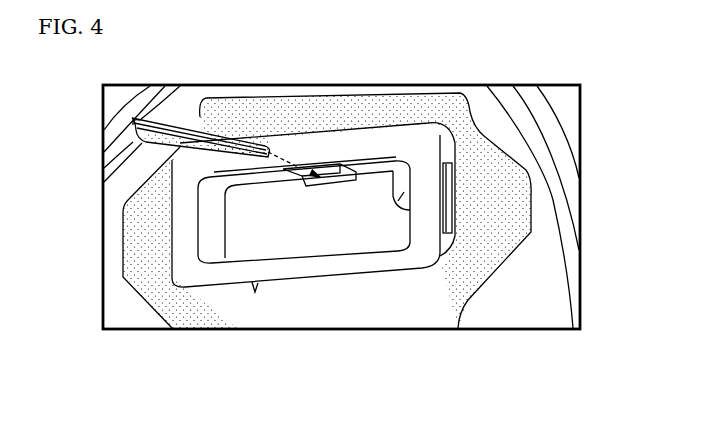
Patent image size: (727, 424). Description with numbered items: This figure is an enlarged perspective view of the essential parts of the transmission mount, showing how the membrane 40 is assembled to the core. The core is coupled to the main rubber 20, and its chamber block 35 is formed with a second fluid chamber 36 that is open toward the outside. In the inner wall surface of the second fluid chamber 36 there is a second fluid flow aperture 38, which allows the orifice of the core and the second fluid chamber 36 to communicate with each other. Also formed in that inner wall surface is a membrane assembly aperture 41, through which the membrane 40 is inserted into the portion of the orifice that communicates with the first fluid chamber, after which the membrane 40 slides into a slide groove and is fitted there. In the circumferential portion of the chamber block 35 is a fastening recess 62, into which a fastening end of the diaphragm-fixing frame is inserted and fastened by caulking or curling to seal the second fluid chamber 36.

The main rubber 20 is at (428, 312).
The chamber block 35 is at (156, 237).
The second fluid chamber 36 is at (280, 238).
The second fluid flow aperture 38 is at (393, 192).
The membrane 40 is at (177, 137).
The membrane assembly aperture 41 is at (342, 186).
The fastening recess 62 is at (452, 193).